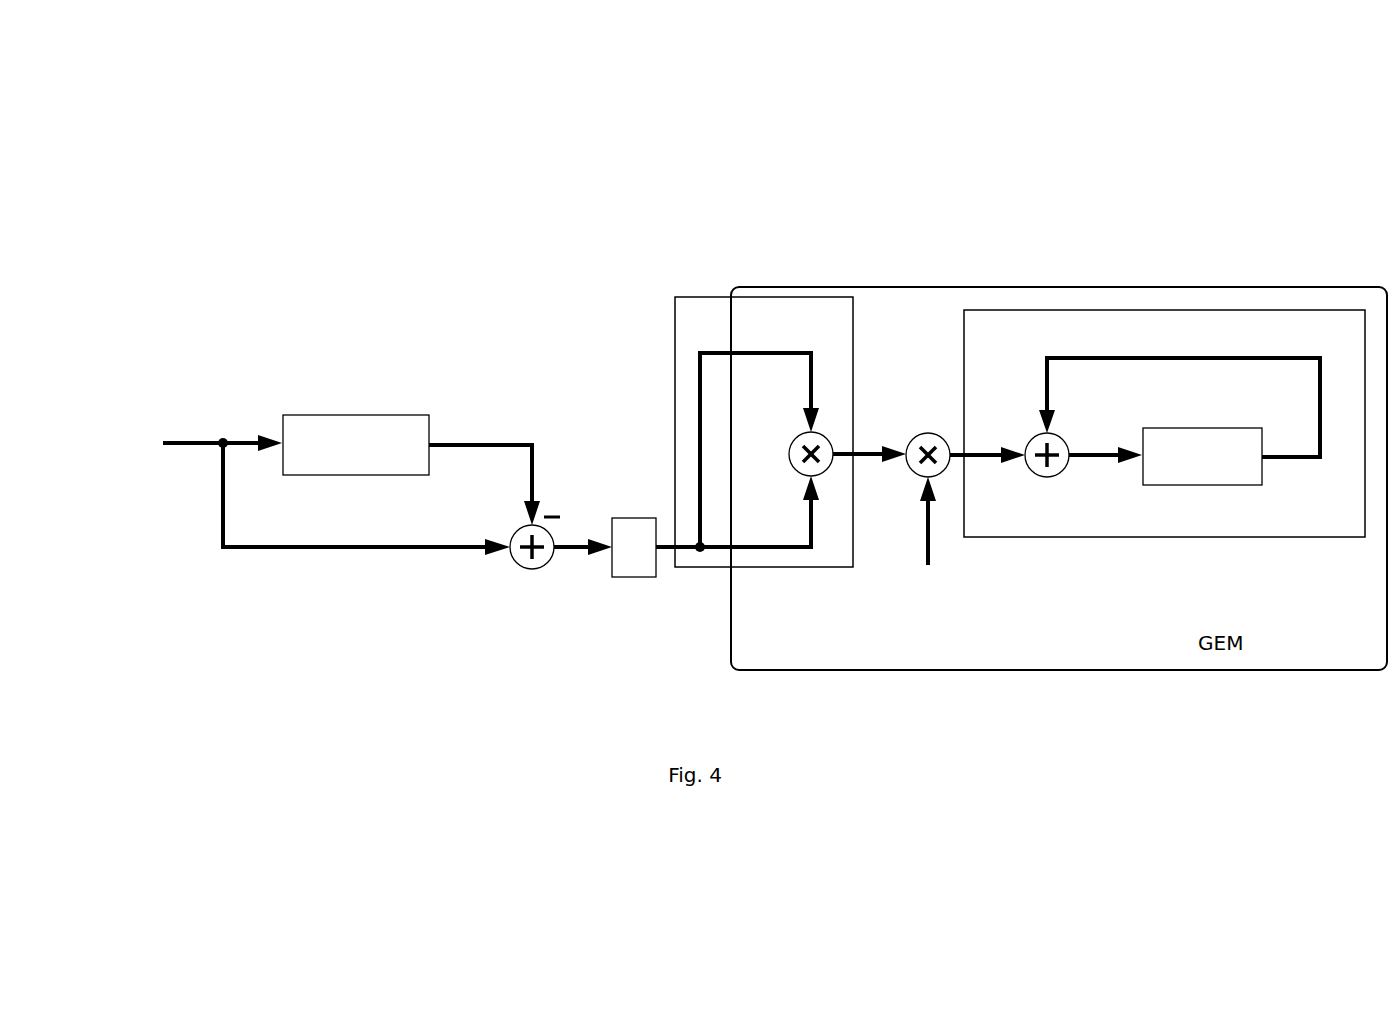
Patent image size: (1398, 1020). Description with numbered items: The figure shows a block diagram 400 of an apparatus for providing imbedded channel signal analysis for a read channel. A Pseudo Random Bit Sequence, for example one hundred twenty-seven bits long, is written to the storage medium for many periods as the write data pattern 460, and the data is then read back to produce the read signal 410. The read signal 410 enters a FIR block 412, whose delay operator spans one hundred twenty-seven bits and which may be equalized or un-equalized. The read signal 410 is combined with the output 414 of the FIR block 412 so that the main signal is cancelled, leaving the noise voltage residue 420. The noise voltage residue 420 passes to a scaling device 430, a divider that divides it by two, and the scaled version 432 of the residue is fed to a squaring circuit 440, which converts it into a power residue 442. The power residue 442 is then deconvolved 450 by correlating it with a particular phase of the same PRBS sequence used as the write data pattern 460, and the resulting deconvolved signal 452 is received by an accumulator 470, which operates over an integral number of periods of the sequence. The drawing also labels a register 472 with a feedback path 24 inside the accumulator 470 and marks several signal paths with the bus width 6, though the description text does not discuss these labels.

The block diagram 400 is at (335, 220).
The read signal 410 is at (175, 443).
The FIR block 412 is at (353, 418).
The output of the FIR block 414 is at (487, 443).
The noise voltage residue 420 is at (573, 548).
The scaling device 430 is at (632, 577).
The scaled version of the noise voltage residue 432 is at (687, 548).
The squaring circuit 440 is at (675, 340).
The power residue 442 is at (895, 447).
The deconvolution 450 is at (930, 432).
The deconvolved signal 452 is at (977, 453).
The write data pattern 460 is at (932, 535).
The accumulator 470 is at (1165, 310).
The register REG 472 is at (1263, 478).
The register feedback loop 24 is at (1173, 377).
The 6-bit bus width indicator 6 is at (179, 458).